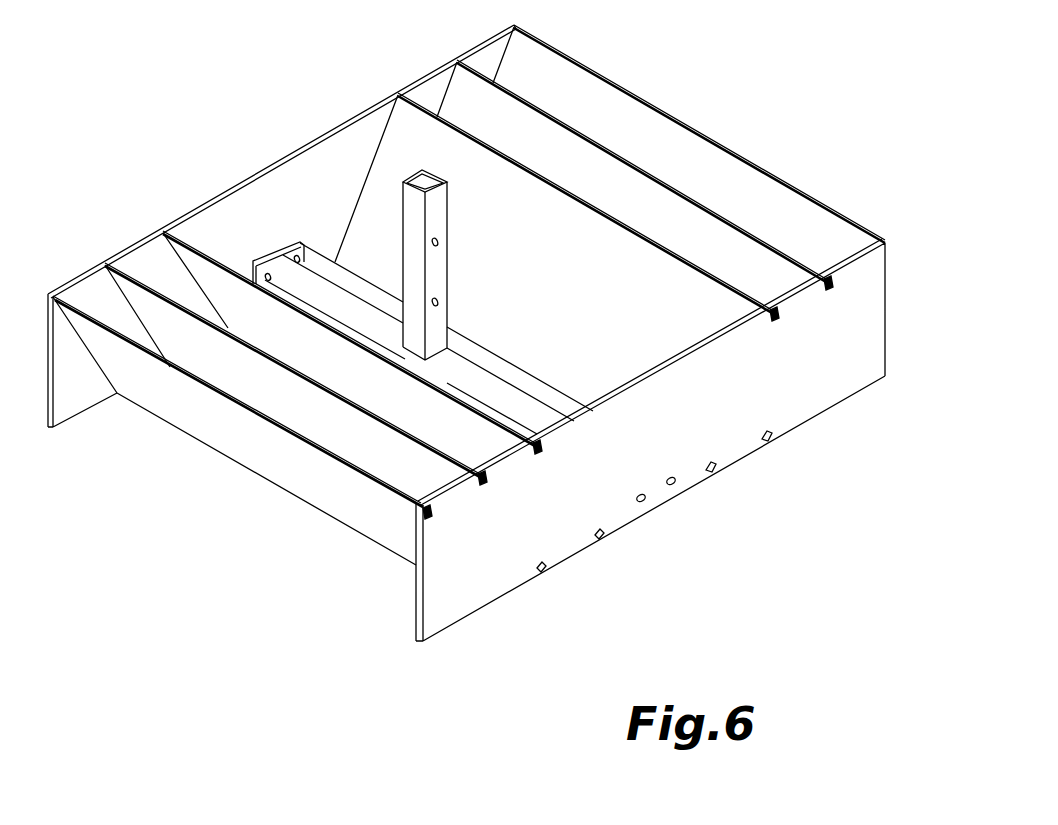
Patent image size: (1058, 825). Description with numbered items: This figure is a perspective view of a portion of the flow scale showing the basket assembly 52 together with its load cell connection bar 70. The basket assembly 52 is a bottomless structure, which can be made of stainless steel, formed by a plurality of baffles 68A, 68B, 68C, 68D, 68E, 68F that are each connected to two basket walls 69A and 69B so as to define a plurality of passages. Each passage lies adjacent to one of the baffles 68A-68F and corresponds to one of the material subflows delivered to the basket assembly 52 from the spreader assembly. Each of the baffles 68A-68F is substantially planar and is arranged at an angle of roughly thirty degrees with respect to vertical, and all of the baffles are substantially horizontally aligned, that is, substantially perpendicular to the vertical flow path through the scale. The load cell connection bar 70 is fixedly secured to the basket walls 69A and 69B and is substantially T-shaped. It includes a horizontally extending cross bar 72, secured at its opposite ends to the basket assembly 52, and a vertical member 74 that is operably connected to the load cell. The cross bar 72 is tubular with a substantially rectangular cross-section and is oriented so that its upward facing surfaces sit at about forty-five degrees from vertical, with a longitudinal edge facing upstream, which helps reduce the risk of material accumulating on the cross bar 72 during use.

The basket assembly 52 is at (466, 333).
The baffle 68A is at (242, 430).
The baffle 68B is at (296, 374).
The baffle 68C is at (352, 342).
The baffle 68D is at (557, 207).
The baffle 68E is at (635, 175).
The baffle 68F is at (689, 134).
The basket wall 69A is at (615, 487).
The basket wall 69B is at (326, 178).
The load cell connection bar 70 is at (423, 245).
The cross bar 72 is at (467, 377).
The vertical member 74 is at (440, 278).